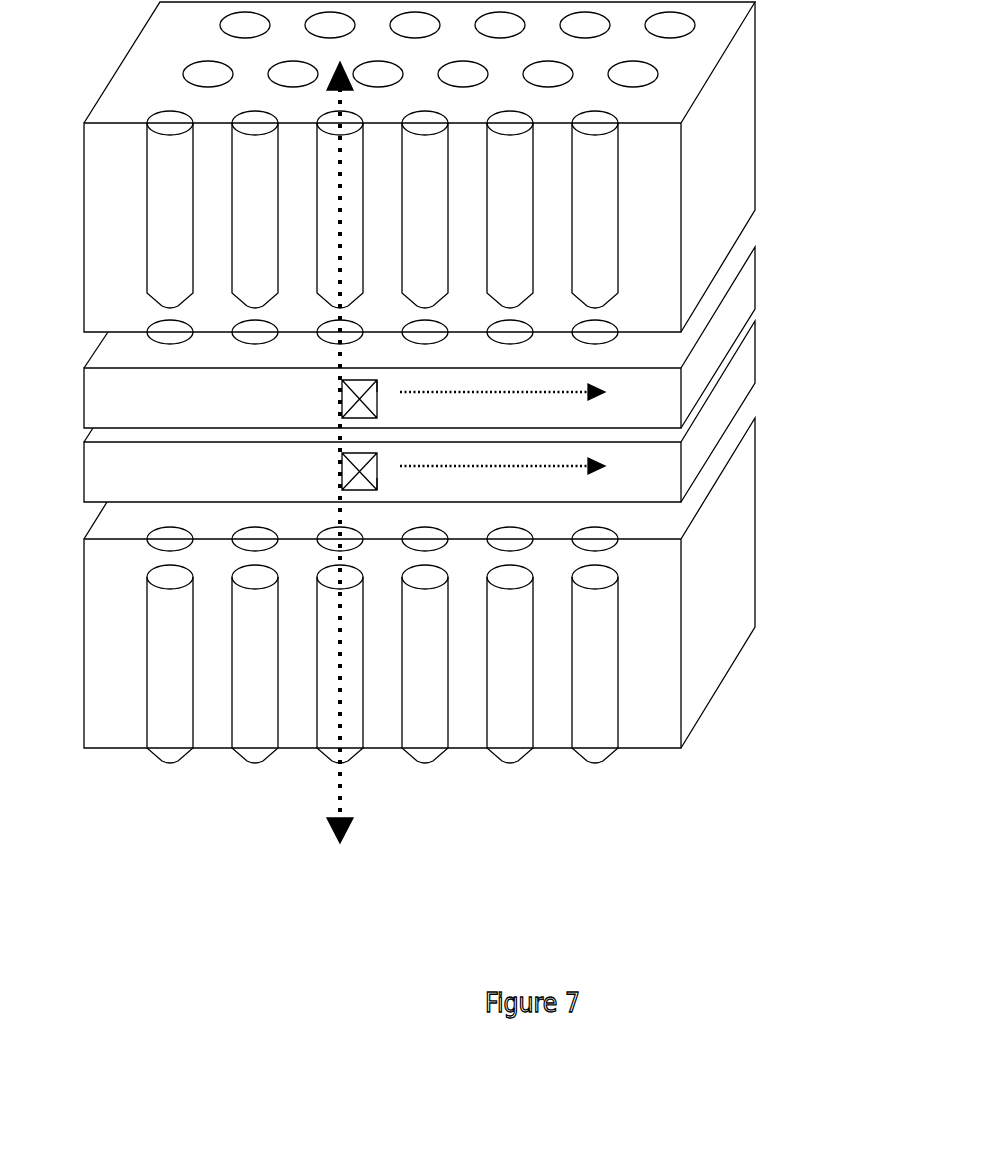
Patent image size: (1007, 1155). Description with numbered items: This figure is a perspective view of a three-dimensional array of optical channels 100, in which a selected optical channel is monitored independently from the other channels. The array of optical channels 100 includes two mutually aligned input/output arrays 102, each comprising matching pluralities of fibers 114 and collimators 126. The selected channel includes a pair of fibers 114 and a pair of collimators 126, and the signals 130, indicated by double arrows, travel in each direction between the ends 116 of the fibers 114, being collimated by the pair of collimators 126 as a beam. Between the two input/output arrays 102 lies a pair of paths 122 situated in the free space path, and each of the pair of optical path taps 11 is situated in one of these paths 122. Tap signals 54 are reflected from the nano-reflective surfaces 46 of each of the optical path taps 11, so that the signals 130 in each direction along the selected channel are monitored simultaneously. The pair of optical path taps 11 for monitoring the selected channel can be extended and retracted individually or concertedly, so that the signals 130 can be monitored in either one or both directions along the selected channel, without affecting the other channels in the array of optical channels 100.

The array of optical channels 100 is at (451, 480).
The input/output array 102 is at (793, 123).
The fiber 114 is at (330, 210).
The end of fiber 116 is at (340, 318).
The collimator 126 is at (352, 328).
The path 122 is at (730, 318).
The optical path tap 11 is at (342, 390).
The tap signal 54 is at (510, 392).
The nano-reflective surface 46 is at (376, 380).
The signals 130 is at (337, 795).